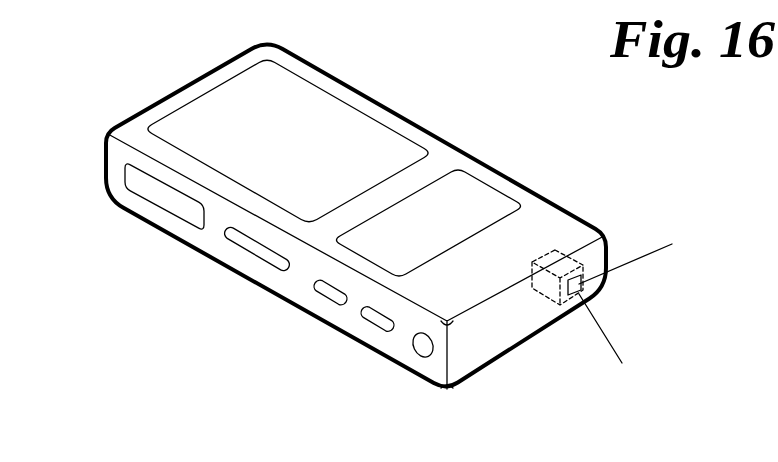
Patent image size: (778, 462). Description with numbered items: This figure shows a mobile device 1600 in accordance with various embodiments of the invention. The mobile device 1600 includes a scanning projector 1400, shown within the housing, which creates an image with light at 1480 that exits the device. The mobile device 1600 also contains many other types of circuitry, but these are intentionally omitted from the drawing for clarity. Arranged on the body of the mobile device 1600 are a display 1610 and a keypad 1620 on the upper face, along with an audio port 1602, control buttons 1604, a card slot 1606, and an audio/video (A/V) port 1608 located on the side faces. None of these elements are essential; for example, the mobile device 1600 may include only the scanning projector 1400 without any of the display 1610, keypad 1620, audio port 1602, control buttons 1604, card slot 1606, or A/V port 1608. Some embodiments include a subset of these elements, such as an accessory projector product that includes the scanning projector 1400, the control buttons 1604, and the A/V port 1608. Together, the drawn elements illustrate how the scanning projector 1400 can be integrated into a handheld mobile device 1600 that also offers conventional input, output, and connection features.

The mobile device 1600 is at (473, 80).
The keypad 1620 is at (215, 108).
The display 1610 is at (472, 190).
The audio/video (A/V) port 1608 is at (133, 177).
The card slot 1606 is at (232, 238).
The control buttons 1604 is at (370, 312).
The audio port 1602 is at (419, 352).
The scanning projector 1400 is at (555, 252).
The light 1480 is at (647, 298).